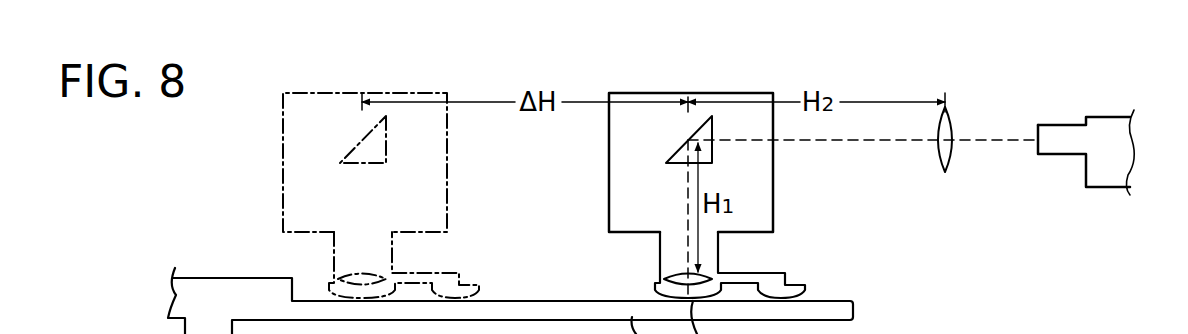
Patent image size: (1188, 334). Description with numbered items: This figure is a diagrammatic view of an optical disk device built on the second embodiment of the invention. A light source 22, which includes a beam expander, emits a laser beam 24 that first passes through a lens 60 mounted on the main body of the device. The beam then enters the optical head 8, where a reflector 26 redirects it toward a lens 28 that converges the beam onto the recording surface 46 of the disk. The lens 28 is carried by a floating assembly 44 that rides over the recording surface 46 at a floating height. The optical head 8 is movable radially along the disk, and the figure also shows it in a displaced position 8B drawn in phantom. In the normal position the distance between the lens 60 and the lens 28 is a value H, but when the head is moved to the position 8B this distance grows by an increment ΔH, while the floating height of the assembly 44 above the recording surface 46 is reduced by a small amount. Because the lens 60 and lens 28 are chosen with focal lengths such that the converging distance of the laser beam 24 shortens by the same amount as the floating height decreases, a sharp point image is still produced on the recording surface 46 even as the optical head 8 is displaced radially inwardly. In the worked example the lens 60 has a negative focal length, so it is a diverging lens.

The optical head 8 is at (734, 93).
The position of the optical head 8B is at (386, 93).
The light source 22 is at (1060, 125).
The laser beam 24 is at (986, 140).
The reflector 26 is at (713, 152).
The lens 28 is at (701, 278).
The floating assembly 44 is at (764, 271).
The recording surface 46 is at (818, 300).
The lens 60 is at (945, 172).